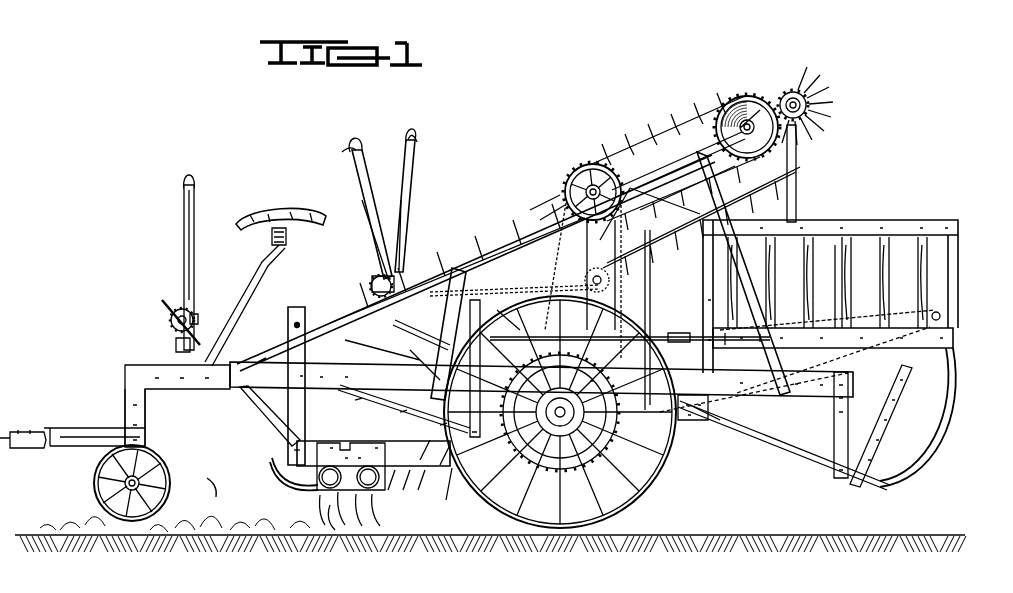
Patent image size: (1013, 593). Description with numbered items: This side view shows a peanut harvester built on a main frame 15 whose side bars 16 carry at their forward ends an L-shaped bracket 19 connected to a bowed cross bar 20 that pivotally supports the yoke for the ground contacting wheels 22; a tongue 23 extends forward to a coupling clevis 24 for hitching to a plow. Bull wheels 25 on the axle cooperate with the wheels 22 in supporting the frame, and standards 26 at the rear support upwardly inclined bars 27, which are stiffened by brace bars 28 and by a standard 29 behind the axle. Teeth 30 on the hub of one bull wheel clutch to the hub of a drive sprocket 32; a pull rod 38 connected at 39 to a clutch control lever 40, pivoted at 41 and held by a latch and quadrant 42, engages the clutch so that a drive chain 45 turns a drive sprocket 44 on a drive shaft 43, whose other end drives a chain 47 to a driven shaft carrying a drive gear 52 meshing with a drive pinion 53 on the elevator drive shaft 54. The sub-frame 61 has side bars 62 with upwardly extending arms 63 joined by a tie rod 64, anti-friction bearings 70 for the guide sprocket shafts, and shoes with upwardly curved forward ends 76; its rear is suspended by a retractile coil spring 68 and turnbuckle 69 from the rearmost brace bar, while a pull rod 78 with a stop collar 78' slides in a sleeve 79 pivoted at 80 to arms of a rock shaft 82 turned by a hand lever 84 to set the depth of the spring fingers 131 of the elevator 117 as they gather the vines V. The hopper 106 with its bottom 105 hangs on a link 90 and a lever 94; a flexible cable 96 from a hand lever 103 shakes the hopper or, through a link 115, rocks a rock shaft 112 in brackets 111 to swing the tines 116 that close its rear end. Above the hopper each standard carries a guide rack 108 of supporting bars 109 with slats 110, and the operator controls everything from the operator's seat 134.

The main frame 15 is at (441, 275).
The side bars 16 is at (313, 388).
The L-shaped bracket 19 is at (128, 369).
The cross bar 20 is at (150, 430).
The ground contacting wheels 22 is at (96, 476).
The tongue 23 is at (76, 430).
The coupling clevis 24 is at (12, 432).
The bull wheels 25 is at (668, 479).
The standards 26 is at (797, 178).
The upwardly inclined bars 27 is at (500, 242).
The brace bars 28 is at (460, 270).
The standard 29 is at (595, 269).
The inwardly projecting teeth 30 is at (747, 119).
The drive sprocket 32 is at (525, 470).
The pull rod 38 is at (420, 356).
The connection 39 is at (396, 322).
The clutch control lever 40 is at (368, 233).
The pivot 41 is at (372, 283).
The latch and quadrant 42 is at (372, 291).
The drive shaft 43 is at (592, 164).
The drive sprocket 44 is at (613, 168).
The drive chain 45 is at (632, 286).
The chain 47 is at (680, 125).
The drive gear 52 is at (770, 100).
The drive pinion 53 is at (806, 92).
The elevator drive shaft 54 is at (826, 104).
The sub-frame 61 is at (458, 471).
The side bars 62 is at (435, 505).
The upwardly extending arms 63 is at (296, 315).
The tie rod 64 is at (292, 325).
The retractile coil spring 68 is at (506, 316).
The turnbuckle 69 is at (682, 337).
The anti-friction bearings 70 is at (336, 522).
The upwardly curved forward end 76 is at (275, 466).
The pull rod 78 is at (266, 416).
The stop collar 78' is at (173, 311).
The sleeves 79 is at (197, 318).
The pivotal connection 80 is at (178, 319).
The rock shaft 82 is at (178, 345).
The hand lever 84 is at (183, 232).
The link 90 is at (838, 462).
The lever 94 is at (626, 421).
The flexible cable 96 is at (500, 290).
The hand lever 103 is at (410, 180).
The bottom 105 is at (762, 446).
The hopper 106 is at (791, 477).
The guide rack 108 is at (950, 220).
The supporting bars 109 is at (897, 232).
The slats 110 is at (836, 240).
The brackets 111 is at (936, 312).
The rock shaft 112 is at (941, 317).
The link 115 is at (692, 421).
The tines 116 is at (936, 452).
The elevator 117 is at (381, 426).
The spring fingers 131 is at (560, 200).
The operator's seat 134 is at (281, 216).
The vines V is at (203, 483).